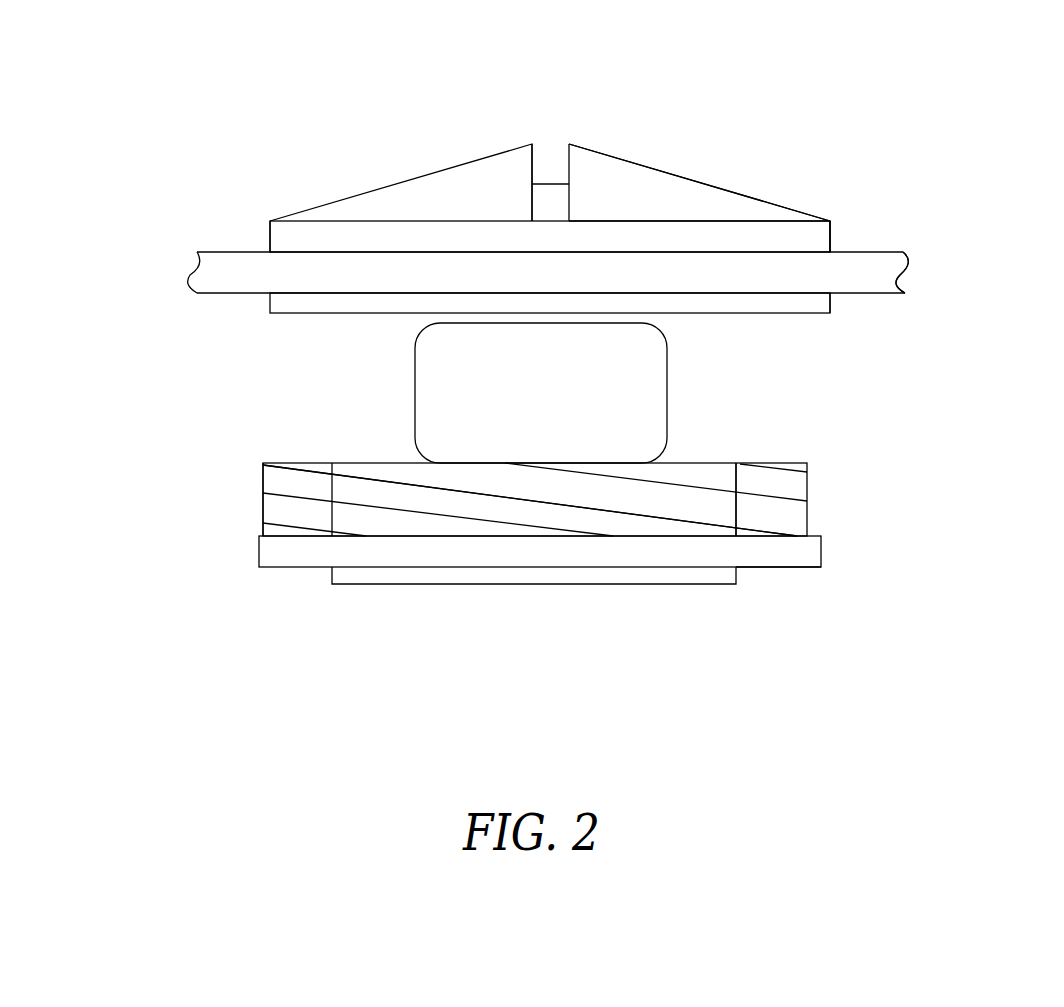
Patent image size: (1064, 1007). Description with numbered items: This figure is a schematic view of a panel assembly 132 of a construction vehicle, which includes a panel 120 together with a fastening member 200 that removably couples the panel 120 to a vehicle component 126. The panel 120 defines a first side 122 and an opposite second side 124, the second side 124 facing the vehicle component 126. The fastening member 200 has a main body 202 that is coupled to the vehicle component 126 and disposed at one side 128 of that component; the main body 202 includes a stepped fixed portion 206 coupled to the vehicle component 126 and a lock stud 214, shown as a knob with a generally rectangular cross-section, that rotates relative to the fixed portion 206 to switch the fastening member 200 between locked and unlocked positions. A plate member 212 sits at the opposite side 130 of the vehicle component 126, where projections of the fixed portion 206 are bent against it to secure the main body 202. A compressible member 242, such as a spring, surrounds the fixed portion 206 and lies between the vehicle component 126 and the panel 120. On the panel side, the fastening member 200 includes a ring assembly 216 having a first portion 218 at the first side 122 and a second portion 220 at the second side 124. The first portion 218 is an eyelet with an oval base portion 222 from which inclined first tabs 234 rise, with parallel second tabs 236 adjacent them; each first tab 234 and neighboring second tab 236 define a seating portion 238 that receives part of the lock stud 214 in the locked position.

The panel 120 is at (890, 268).
The first side 122 is at (868, 222).
The second side 124 is at (877, 322).
The vehicle component 126 is at (810, 553).
The side of the vehicle component 128 is at (825, 510).
The side of the vehicle component 130 is at (805, 595).
The panel assembly 132 is at (940, 216).
The fastening member 200 is at (821, 157).
The main body 202 is at (350, 413).
The fixed portion 206 is at (343, 490).
The plate member 212 is at (347, 576).
The lock stud 214 is at (653, 405).
The ring assembly 216 is at (746, 167).
The first portion 218 is at (245, 232).
The second portion 220 is at (285, 302).
The base portion 222 is at (360, 232).
The first tabs 234 is at (418, 185).
The second tabs 236 is at (550, 193).
The seating portion 238 is at (565, 143).
The compressible member 242 is at (263, 463).